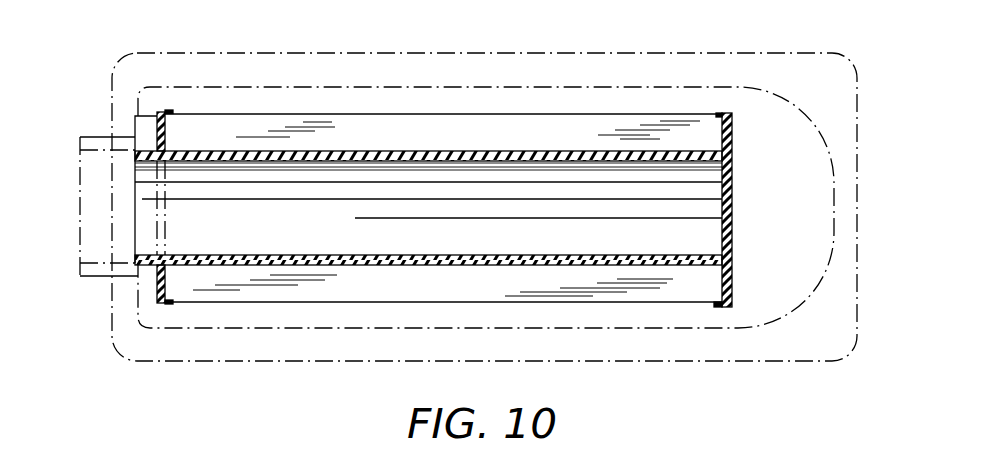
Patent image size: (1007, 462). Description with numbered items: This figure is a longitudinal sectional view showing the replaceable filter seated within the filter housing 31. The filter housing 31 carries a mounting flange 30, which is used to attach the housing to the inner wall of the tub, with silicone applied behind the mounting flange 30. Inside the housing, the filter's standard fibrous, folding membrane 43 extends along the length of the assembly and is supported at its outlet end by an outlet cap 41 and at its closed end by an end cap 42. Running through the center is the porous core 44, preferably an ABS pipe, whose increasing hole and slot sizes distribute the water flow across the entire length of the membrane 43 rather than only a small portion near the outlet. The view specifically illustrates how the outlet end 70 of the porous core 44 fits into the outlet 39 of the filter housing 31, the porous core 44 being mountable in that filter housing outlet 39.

The mounting flange 30 is at (822, 96).
The filter housing 31 is at (793, 157).
The filter housing outlet 39 is at (106, 185).
The outlet cap 41 is at (157, 117).
The end cap 42 is at (732, 229).
The folding membrane 43 is at (411, 153).
The porous core 44 is at (647, 266).
The outlet end 70 is at (148, 262).